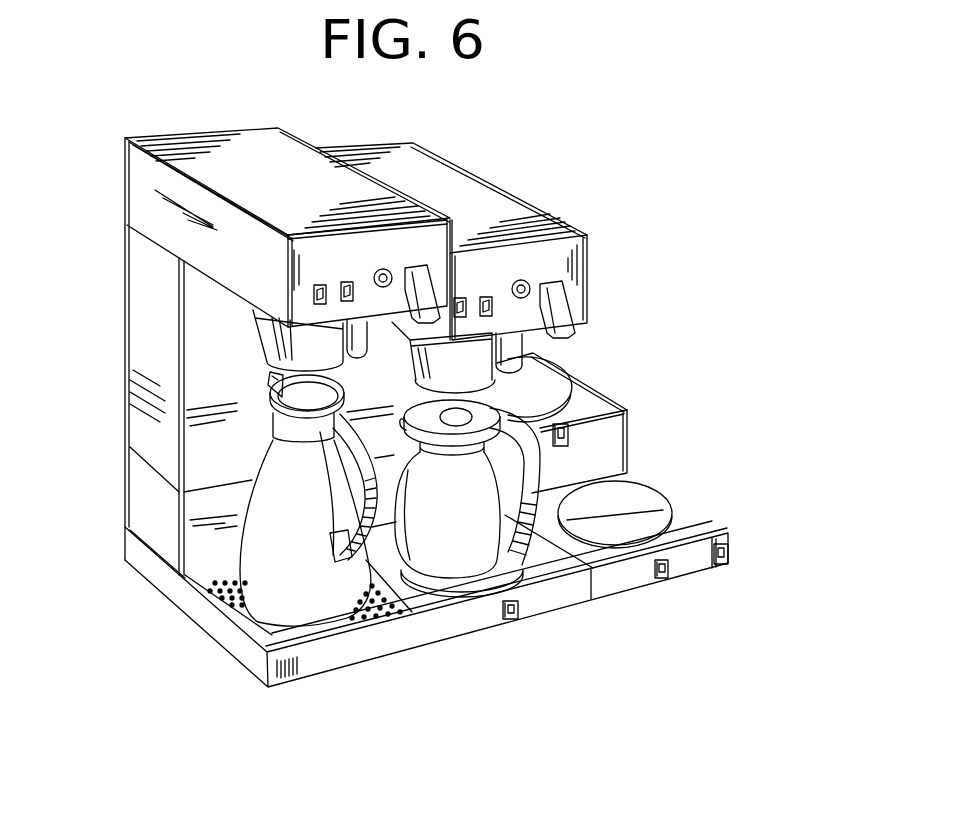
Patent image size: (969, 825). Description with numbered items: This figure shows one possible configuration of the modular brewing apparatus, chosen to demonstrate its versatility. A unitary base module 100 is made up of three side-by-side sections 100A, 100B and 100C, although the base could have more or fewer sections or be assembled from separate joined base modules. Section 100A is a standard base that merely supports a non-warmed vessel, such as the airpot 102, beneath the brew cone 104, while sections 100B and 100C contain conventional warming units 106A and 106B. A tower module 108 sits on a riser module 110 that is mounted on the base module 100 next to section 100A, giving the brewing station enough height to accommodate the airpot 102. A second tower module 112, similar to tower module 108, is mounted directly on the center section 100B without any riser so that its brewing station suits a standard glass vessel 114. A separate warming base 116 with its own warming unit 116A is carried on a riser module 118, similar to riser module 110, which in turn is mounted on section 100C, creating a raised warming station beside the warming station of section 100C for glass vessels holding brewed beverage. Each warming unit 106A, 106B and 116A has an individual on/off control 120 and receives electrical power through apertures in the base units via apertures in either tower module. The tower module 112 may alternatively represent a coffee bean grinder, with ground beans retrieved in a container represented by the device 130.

The unitary base module 100 is at (152, 558).
The base section 100A is at (252, 661).
The base section 100B is at (490, 624).
The base section 100C is at (730, 550).
The airpot 102 is at (270, 588).
The brew cone 104 is at (273, 342).
The warming unit 106A is at (436, 578).
The warming unit 106B is at (657, 508).
The tower module 108 is at (135, 272).
The riser module 110 is at (140, 488).
The tower module 112 is at (522, 210).
The standard glass vessel 114 is at (528, 528).
The warming base 116 is at (593, 400).
The warming unit 116A is at (553, 378).
The riser module 118 is at (618, 452).
The on/off control 120 is at (568, 437).
The container 130 is at (320, 499).